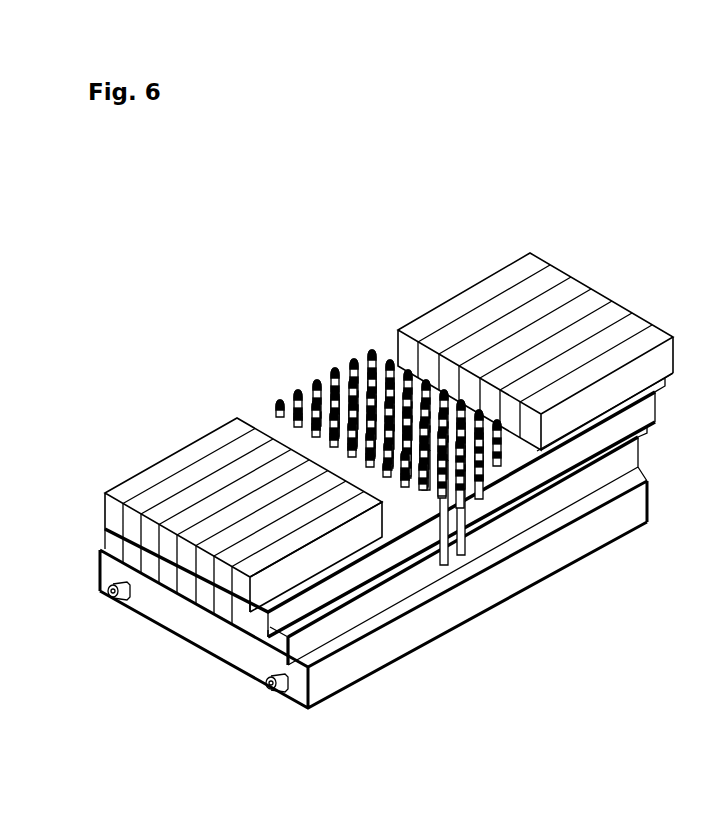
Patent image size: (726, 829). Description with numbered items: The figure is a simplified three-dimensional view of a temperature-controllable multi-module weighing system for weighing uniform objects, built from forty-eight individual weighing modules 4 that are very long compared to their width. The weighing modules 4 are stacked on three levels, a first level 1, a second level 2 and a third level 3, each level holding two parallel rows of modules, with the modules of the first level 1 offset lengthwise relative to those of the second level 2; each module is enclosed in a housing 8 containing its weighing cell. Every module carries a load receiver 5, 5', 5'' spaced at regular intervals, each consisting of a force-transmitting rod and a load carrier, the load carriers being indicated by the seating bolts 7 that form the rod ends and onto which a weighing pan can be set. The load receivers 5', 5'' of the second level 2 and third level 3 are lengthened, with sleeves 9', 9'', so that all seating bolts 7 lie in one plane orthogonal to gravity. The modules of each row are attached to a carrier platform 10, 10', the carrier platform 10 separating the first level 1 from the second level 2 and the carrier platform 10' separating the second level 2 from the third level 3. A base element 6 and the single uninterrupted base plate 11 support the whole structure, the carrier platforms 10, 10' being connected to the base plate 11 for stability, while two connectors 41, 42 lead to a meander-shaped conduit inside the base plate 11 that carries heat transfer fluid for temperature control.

The first level 1 is at (690, 352).
The second level 2 is at (690, 405).
The third level 3 is at (690, 452).
The weighing module 4 is at (162, 443).
The load receiver 5 is at (249, 379).
The load receiver 5' is at (276, 370).
The load receiver 5'' is at (303, 363).
The base element 6 is at (390, 357).
The seating bolt 7 is at (370, 348).
The housing of the weighing module 8 is at (283, 581).
The sleeve 9' is at (464, 536).
The sleeve 9'' is at (487, 535).
The carrier platform 10 is at (231, 648).
The carrier platform 10' is at (262, 673).
The base plate 11 is at (322, 673).
The connector 41 is at (277, 693).
The connector 42 is at (110, 598).